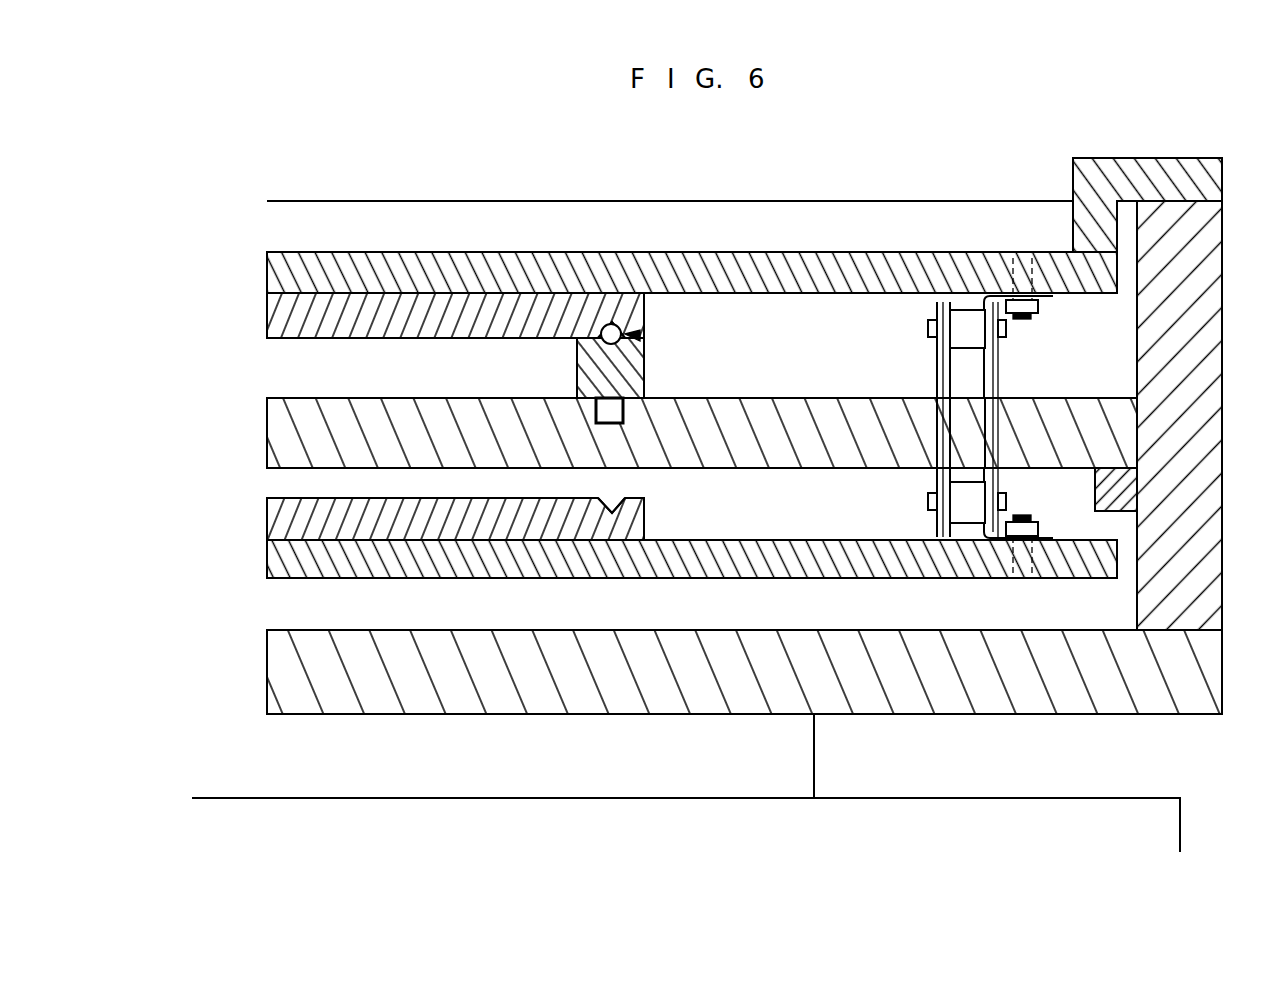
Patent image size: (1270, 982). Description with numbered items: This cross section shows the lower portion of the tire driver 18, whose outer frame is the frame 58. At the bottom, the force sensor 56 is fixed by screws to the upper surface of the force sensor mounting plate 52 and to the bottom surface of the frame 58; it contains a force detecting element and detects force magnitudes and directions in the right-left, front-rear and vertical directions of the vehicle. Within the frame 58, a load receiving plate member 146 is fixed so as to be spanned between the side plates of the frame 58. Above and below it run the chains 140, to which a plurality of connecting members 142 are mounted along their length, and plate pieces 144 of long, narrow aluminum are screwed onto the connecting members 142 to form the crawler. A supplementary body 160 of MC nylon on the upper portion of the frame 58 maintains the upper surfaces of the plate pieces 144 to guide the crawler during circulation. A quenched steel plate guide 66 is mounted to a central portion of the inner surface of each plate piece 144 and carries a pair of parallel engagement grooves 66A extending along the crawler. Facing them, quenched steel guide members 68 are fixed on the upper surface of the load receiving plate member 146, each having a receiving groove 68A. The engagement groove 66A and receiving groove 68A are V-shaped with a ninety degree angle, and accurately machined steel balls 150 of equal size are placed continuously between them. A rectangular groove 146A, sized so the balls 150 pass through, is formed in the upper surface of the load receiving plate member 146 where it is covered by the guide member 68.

The tire driver 18 is at (970, 150).
The supplementary body 160 is at (1126, 158).
The frame 58 is at (1223, 522).
The plate piece 144 is at (806, 252).
The plate guide 66 is at (645, 312).
The engagement groove 66A is at (632, 338).
The guide member 68 is at (645, 372).
The receiving groove 68A is at (578, 341).
The ball 150 is at (604, 326).
The load receiving plate member 146 is at (790, 398).
The rectangular groove 146A is at (626, 417).
The chain 140 is at (996, 352).
The connecting member 142 is at (1042, 300).
The force sensor 56 is at (816, 740).
The force sensor mounting plate 52 is at (792, 839).